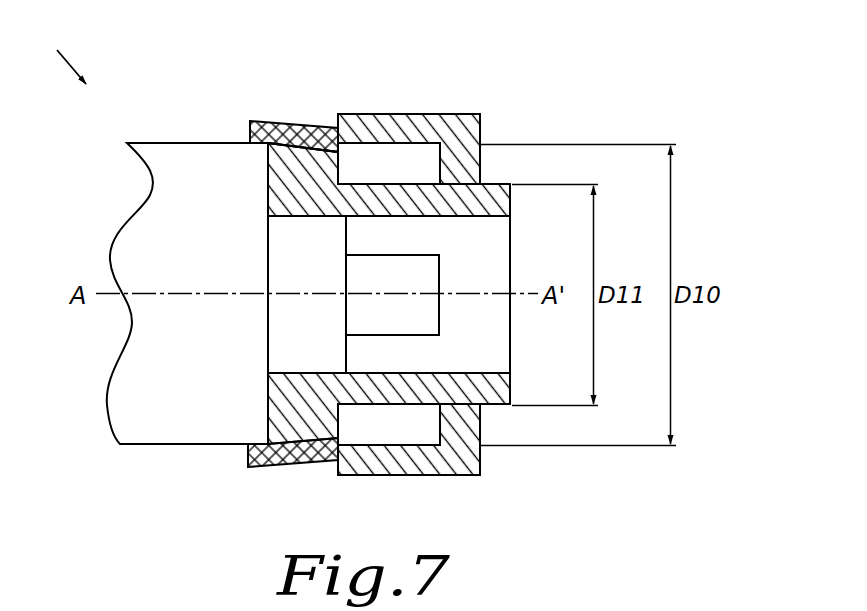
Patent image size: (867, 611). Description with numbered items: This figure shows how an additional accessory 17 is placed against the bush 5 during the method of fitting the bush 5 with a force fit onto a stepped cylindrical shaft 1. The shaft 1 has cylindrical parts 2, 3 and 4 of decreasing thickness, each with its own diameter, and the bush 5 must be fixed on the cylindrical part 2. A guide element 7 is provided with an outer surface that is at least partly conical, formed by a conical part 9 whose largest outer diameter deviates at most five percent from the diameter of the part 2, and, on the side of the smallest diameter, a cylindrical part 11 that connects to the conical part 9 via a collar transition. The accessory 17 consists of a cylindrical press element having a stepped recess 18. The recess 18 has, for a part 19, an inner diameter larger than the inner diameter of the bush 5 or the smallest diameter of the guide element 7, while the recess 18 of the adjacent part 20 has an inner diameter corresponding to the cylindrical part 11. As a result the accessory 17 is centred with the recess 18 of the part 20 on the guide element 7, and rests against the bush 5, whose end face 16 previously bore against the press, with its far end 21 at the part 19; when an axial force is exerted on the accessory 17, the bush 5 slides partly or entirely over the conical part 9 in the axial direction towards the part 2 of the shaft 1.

The stepped cylindrical shaft 1 is at (66, 54).
The cylindrical part of the shaft 2 is at (193, 157).
The cylindrical part of the shaft 3 is at (263, 445).
The cylindrical part of the shaft 4 is at (383, 327).
The bush 5 is at (332, 138).
The guide element 7 is at (300, 160).
The conical part of the guide element 9 is at (282, 127).
The cylindrical part of the guide element 11 is at (483, 193).
The end face of the bush 16 is at (362, 472).
The additional accessory 17 is at (462, 130).
The stepped recess 18 is at (408, 428).
The part of the recess 19 is at (442, 112).
The adjacent part of the accessory 20 is at (479, 112).
The far end of the accessory 21 is at (335, 466).